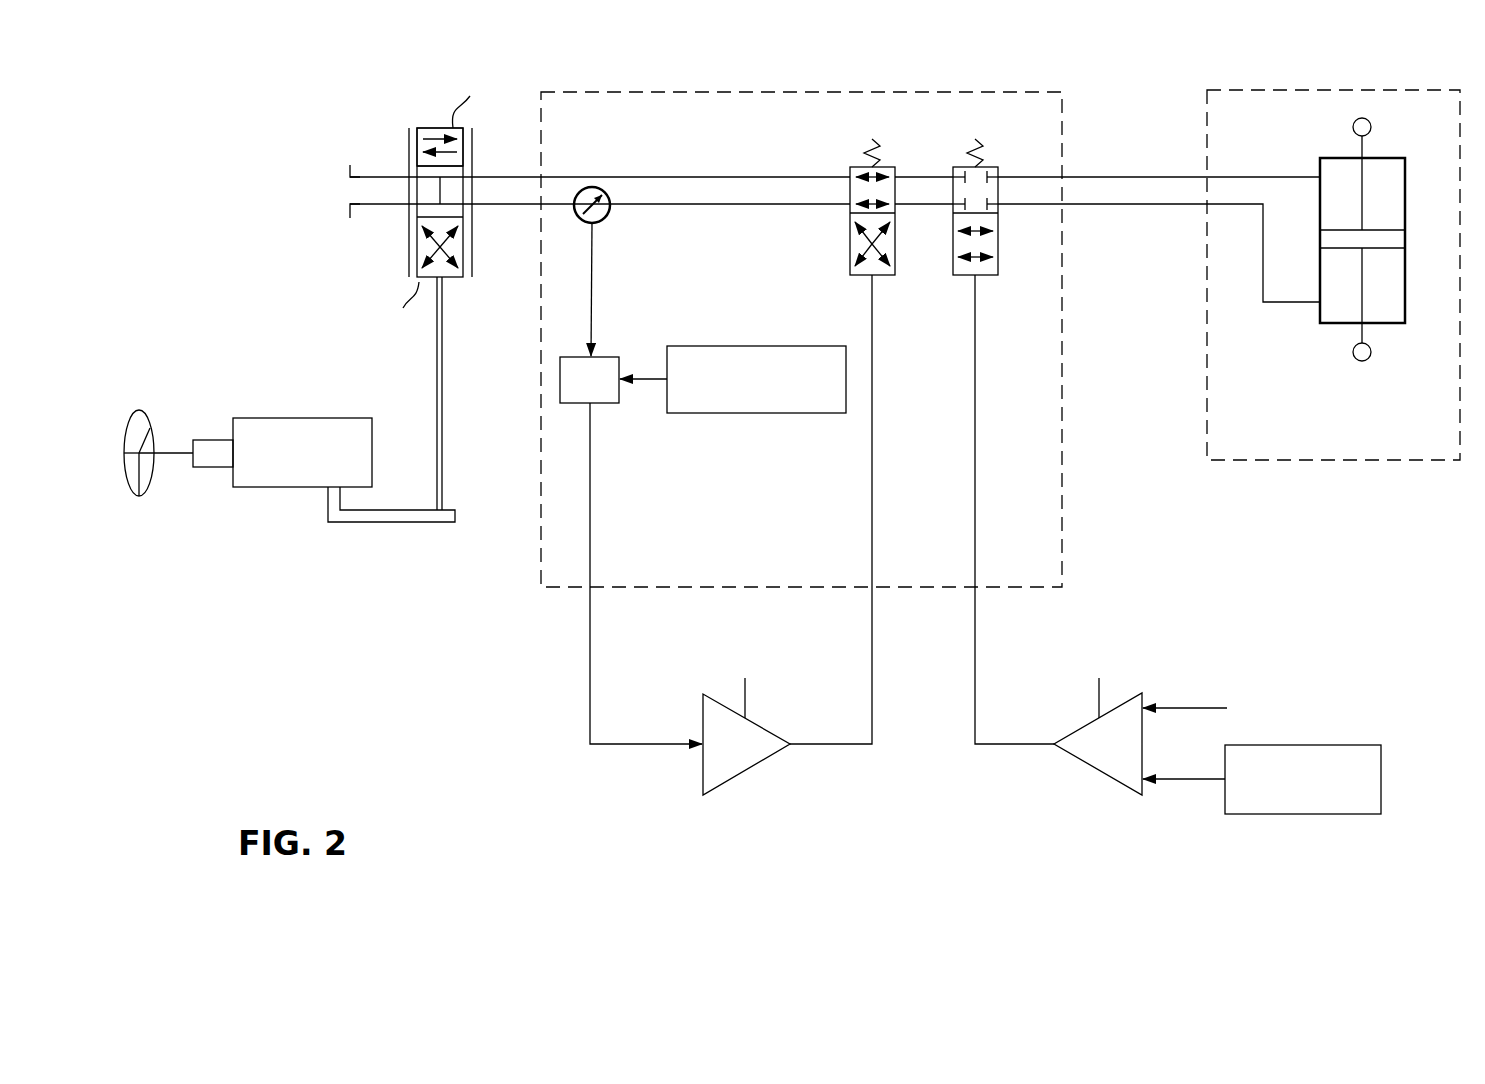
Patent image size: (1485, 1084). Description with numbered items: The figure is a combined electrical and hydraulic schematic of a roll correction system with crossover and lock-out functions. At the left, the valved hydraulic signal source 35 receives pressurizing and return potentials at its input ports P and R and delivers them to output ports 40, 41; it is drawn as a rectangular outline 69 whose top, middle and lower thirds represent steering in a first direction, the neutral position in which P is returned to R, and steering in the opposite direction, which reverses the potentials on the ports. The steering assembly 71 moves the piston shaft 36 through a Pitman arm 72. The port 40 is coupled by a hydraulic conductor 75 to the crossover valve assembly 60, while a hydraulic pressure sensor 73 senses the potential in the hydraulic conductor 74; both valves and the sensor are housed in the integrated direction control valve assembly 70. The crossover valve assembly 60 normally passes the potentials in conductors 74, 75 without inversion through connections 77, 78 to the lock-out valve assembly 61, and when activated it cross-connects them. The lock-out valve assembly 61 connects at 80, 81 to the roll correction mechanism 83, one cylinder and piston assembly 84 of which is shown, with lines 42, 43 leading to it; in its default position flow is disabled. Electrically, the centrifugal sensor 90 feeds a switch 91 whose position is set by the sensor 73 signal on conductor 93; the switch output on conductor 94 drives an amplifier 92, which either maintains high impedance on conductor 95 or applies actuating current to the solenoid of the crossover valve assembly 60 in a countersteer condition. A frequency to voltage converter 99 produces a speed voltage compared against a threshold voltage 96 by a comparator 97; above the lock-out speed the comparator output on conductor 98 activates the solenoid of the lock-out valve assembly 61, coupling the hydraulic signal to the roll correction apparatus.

The valved hydraulic signal source 35 is at (386, 118).
The rectangular outline 69 is at (428, 128).
The output port 40 is at (505, 176).
The output port 41 is at (510, 207).
The hydraulic conductor 75 is at (692, 180).
The hydraulic conductor 74 is at (740, 207).
The hydraulic connection 78 is at (927, 175).
The hydraulic connection 77 is at (928, 207).
The hydraulic connection 81 is at (1032, 175).
The hydraulic connection 80 is at (1033, 207).
The pressure line to roll correction apparatus 42 is at (1133, 175).
The return line to roll correction apparatus 43 is at (1137, 207).
The hydraulic pressure sensor 73 is at (606, 215).
The direction control valve assembly 70 is at (987, 72).
The crossover valve assembly 60 is at (826, 253).
The lock-out valve assembly 61 is at (1009, 296).
The roll correction mechanism 83 is at (1243, 462).
The roll correction cylinder and piston assembly 84 is at (1333, 158).
The steering assembly 71 is at (270, 515).
The Pitman arm 72 is at (390, 524).
The piston shaft 36 is at (443, 428).
The electrical signal conductor 93 is at (592, 295).
The switch 91 is at (608, 404).
The centrifugal sensor 90 is at (815, 413).
The electric signal conductor 94 is at (590, 518).
The amplifier 92 is at (752, 768).
The electrical signal conductor 95 is at (872, 643).
The electrical signal conductor 98 is at (975, 705).
The comparator 97 is at (1088, 765).
The threshold voltage 96 is at (1320, 695).
The frequency to voltage converter 99 is at (1381, 772).